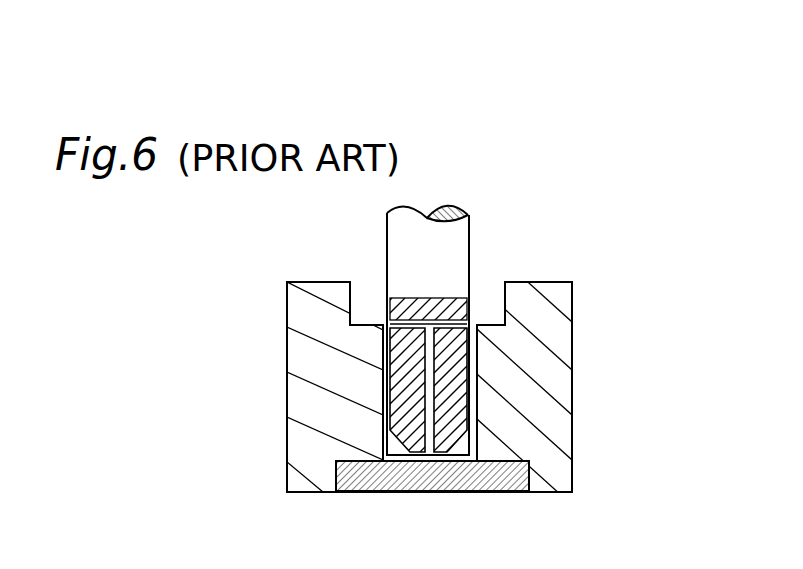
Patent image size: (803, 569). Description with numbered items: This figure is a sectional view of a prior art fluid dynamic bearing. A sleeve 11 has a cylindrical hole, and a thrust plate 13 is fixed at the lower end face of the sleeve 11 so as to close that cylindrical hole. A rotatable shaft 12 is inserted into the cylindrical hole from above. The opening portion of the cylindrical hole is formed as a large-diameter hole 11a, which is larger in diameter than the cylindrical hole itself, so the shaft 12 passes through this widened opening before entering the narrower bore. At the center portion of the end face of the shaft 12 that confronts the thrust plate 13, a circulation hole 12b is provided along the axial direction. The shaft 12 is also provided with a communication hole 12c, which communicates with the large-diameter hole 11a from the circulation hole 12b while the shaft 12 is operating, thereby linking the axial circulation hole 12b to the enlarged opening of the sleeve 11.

The sleeve 11 is at (300, 402).
The large-diameter hole 11a is at (368, 302).
The shaft 12 is at (453, 248).
The circulation hole 12b is at (430, 392).
The communication hole 12c is at (467, 324).
The thrust plate 13 is at (435, 483).